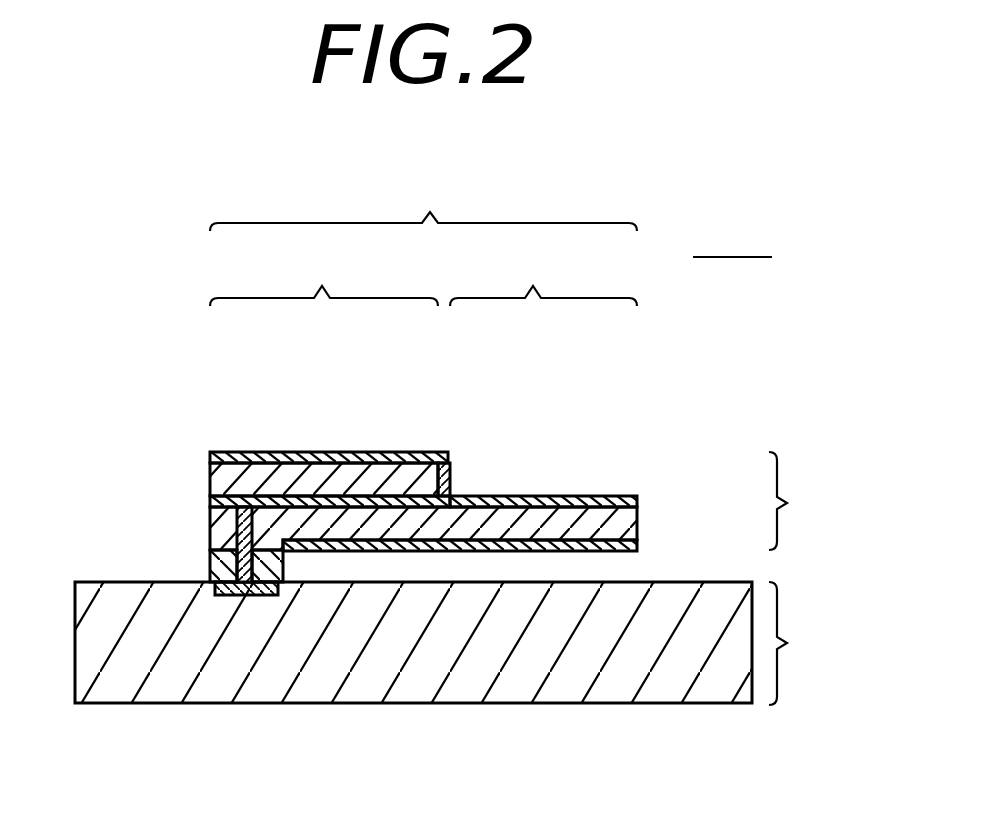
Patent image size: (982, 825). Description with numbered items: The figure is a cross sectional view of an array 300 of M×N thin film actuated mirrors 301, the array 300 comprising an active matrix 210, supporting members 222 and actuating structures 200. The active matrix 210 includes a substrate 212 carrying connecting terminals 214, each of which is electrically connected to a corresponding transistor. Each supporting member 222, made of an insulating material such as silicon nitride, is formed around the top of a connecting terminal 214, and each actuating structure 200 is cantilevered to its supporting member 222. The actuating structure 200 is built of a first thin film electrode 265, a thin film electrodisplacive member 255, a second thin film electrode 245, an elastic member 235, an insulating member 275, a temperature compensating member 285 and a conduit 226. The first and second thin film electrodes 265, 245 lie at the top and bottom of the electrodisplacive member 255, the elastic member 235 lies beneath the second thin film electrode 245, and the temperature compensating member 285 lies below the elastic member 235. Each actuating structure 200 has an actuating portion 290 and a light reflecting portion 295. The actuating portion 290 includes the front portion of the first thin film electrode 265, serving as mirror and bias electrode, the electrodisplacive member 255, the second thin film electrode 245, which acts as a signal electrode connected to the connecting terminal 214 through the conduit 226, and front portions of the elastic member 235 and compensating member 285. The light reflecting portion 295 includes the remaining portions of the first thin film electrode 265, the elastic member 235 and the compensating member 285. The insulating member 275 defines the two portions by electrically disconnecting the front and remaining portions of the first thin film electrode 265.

The actuating structure 200 is at (821, 501).
The active matrix 210 is at (821, 643).
The substrate 212 is at (363, 692).
The connecting terminal 214 is at (237, 598).
The supporting member 222 is at (220, 572).
The conduit 226 is at (240, 532).
The elastic member 235 is at (540, 522).
The second thin film electrode 245 is at (213, 500).
The thin film electrodisplacive member 255 is at (213, 466).
The first thin film electrode 265 is at (503, 503).
The insulating member 275 is at (445, 462).
The temperature compensating member 285 is at (612, 546).
The actuating portion 290 is at (324, 273).
The light reflecting portion 295 is at (543, 273).
The array of M×N thin film actuated mirrors 300 is at (732, 236).
The thin film actuated mirror 301 is at (423, 198).